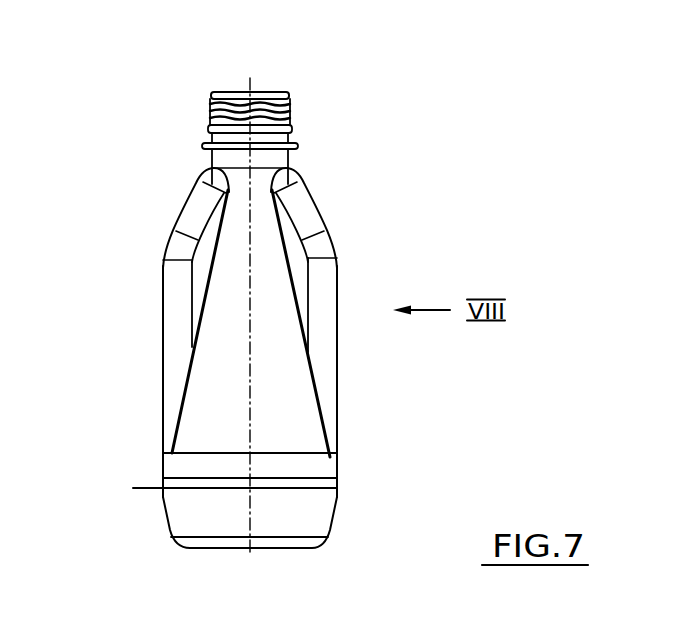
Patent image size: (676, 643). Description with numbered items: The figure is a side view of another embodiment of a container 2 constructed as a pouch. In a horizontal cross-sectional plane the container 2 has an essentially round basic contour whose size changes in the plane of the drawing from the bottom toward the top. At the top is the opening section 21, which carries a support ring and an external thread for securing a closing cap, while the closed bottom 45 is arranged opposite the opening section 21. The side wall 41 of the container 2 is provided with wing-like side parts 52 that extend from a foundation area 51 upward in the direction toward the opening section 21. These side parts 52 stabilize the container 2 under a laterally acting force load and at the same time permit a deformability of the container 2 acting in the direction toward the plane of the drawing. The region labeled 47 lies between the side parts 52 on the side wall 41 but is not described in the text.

The container 2 is at (122, 301).
The opening section 21 is at (272, 88).
The wing-like side parts 52 is at (194, 214).
The side panel 47 is at (305, 285).
The side wall 41 is at (305, 413).
The foundation area 51 is at (133, 488).
The closed bottom 45 is at (288, 543).